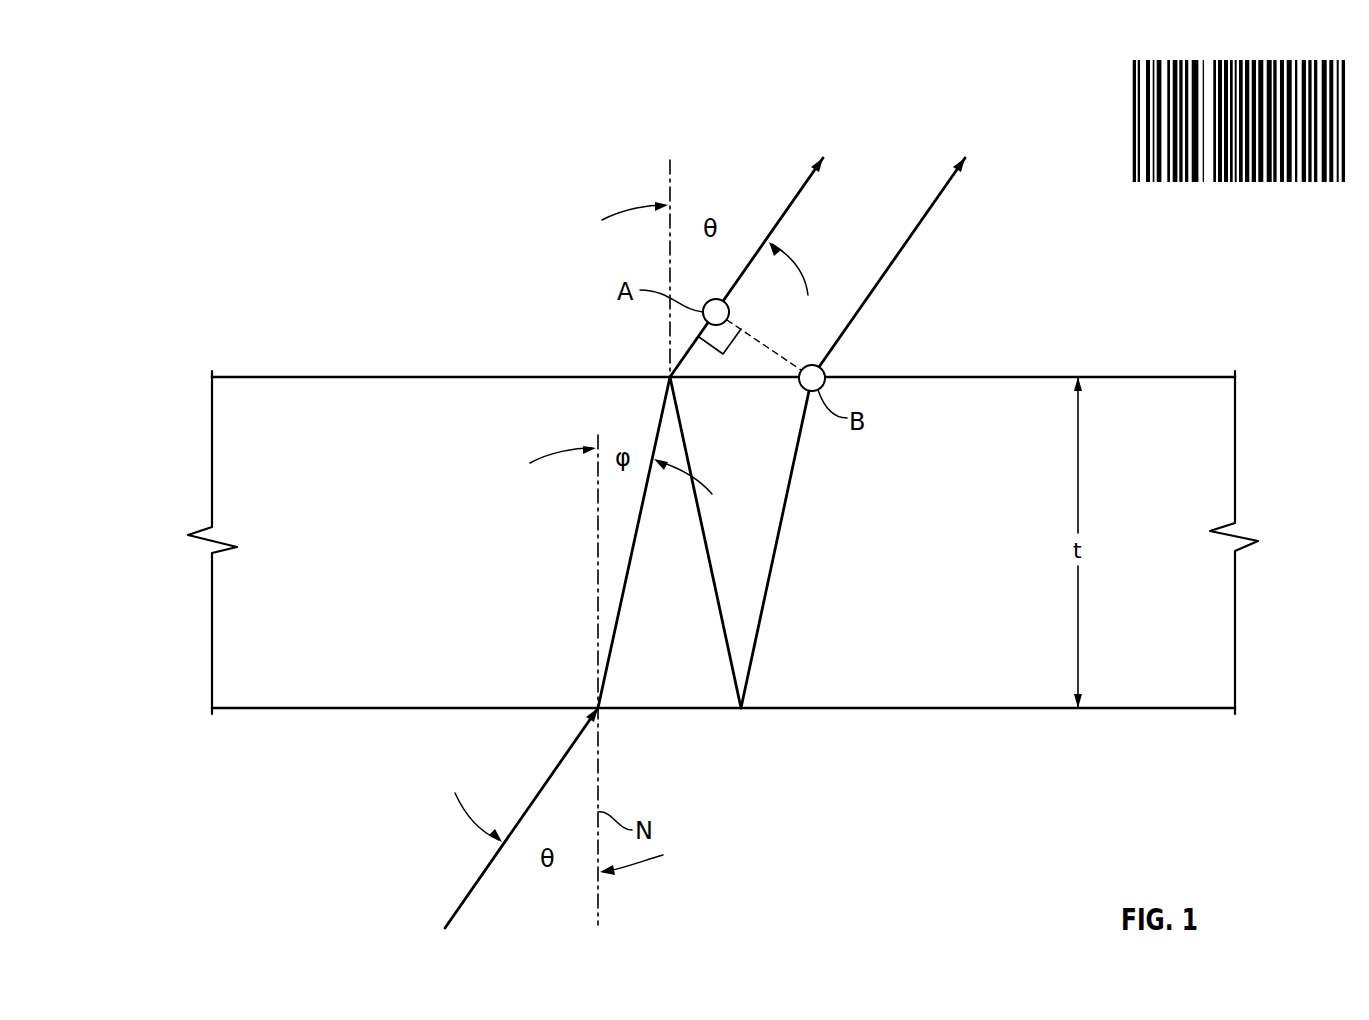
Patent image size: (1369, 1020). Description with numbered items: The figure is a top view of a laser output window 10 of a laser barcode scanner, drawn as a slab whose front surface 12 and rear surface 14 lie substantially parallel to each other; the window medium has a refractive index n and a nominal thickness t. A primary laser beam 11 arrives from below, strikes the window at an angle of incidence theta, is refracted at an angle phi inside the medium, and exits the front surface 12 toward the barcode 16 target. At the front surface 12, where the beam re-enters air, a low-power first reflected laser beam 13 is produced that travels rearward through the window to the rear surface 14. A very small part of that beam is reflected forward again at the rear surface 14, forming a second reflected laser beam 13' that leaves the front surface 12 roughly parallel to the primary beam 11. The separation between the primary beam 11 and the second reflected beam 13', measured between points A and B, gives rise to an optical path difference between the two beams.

The laser output window 10 is at (322, 179).
The primary laser beam 11 is at (790, 207).
The front surface 12 is at (391, 374).
The first reflected laser beam 13 is at (698, 542).
The second reflected laser beam 13' is at (864, 433).
The rear surface 14 is at (966, 712).
The barcode 16 is at (1132, 100).